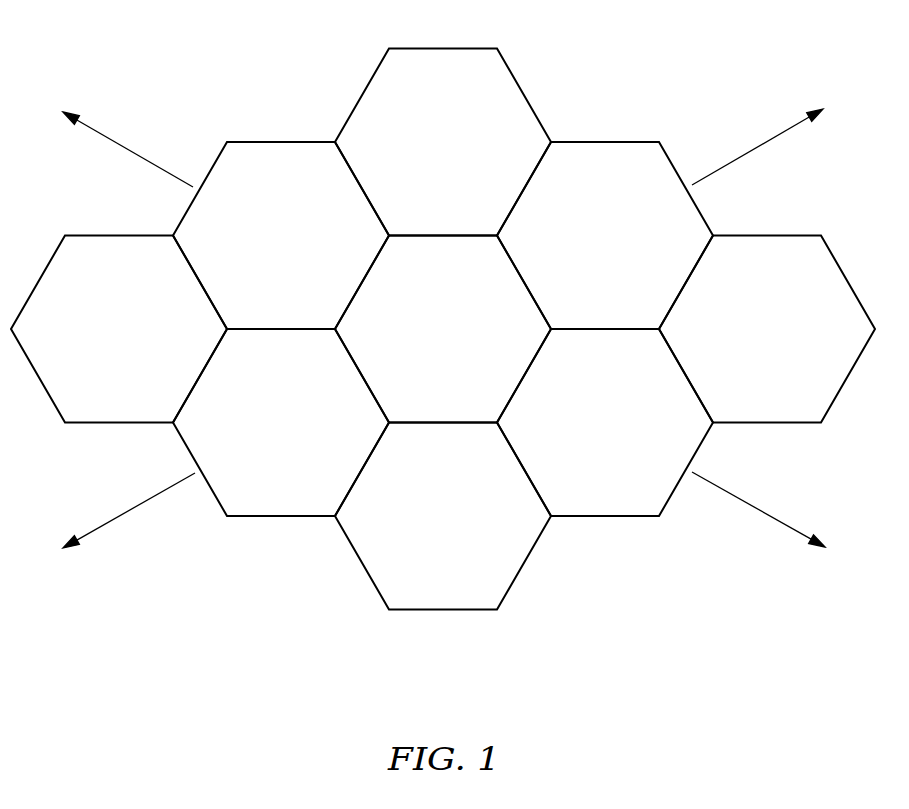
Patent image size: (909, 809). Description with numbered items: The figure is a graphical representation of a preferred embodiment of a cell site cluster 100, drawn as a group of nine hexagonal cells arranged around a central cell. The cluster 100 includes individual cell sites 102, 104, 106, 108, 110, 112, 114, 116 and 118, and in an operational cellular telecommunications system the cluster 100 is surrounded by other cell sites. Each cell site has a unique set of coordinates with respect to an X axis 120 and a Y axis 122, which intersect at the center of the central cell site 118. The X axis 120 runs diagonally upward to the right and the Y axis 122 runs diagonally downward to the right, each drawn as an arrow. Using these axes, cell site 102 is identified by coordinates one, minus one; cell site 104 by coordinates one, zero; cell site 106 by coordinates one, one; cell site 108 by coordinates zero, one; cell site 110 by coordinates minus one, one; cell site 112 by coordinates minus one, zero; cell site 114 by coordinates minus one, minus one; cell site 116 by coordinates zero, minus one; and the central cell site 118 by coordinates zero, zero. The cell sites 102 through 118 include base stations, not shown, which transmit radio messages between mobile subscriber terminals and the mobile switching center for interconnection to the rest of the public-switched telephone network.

The cell site cluster 100 is at (443, 354).
The cell site 102 is at (497, 49).
The cell site 104 is at (661, 143).
The cell site 106 is at (823, 237).
The cell site 108 is at (661, 514).
The cell site 110 is at (388, 610).
The cell site 112 is at (227, 516).
The cell site 114 is at (65, 423).
The cell site 116 is at (226, 143).
The cell site 118 is at (424, 286).
The X axis 120 is at (753, 152).
The Y axis 122 is at (755, 503).